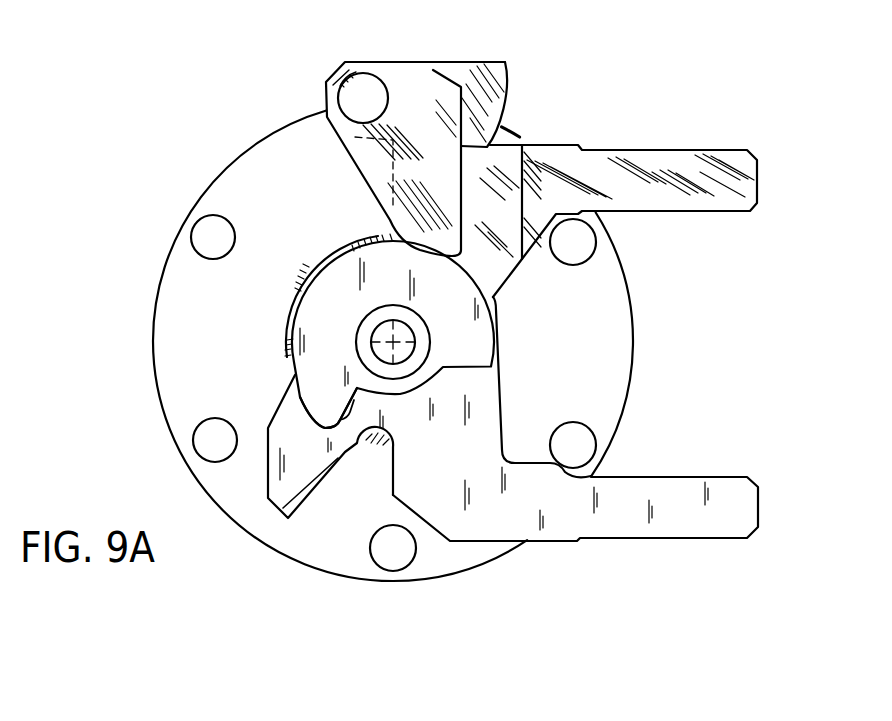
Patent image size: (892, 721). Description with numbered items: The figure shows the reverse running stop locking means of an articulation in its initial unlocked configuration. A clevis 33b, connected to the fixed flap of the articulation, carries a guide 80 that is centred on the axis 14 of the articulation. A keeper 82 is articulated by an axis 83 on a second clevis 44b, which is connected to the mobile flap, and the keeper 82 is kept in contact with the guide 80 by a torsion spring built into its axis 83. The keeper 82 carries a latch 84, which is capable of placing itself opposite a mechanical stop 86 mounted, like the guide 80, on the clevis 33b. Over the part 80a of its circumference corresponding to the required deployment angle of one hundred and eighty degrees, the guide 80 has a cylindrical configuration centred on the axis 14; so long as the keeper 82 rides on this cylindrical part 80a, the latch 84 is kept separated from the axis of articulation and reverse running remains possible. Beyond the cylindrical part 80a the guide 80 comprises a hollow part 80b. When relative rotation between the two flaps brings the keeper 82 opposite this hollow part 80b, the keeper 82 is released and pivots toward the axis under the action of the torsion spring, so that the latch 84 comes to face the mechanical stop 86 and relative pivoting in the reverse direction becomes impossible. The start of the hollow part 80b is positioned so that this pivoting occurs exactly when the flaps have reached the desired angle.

The axis 14 is at (395, 342).
The clevis 33b is at (480, 480).
The clevis 44b is at (657, 167).
The guide 80 is at (283, 297).
The cylindrical part 80a is at (341, 248).
The hollow part 80b is at (298, 403).
The keeper 82 is at (407, 103).
The axis 83 is at (362, 100).
The latch 84 is at (506, 76).
The mechanical stop 86 is at (290, 517).